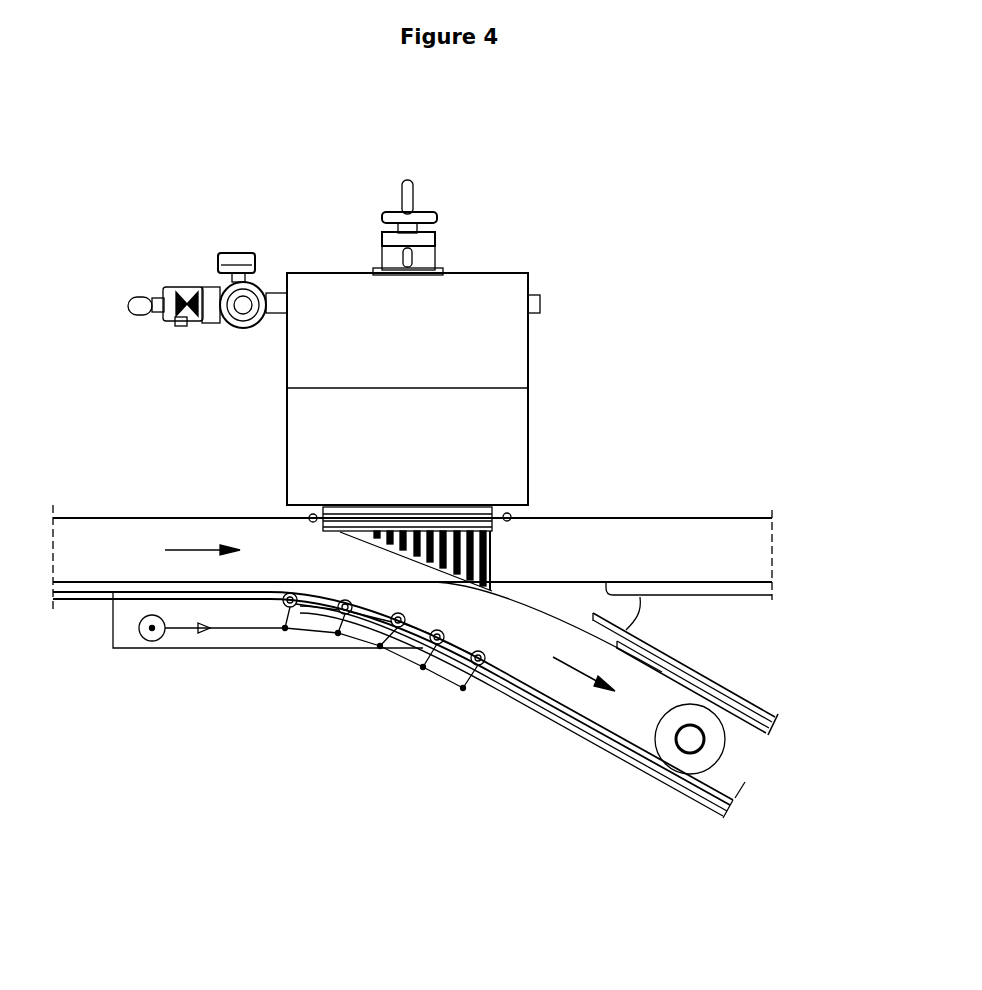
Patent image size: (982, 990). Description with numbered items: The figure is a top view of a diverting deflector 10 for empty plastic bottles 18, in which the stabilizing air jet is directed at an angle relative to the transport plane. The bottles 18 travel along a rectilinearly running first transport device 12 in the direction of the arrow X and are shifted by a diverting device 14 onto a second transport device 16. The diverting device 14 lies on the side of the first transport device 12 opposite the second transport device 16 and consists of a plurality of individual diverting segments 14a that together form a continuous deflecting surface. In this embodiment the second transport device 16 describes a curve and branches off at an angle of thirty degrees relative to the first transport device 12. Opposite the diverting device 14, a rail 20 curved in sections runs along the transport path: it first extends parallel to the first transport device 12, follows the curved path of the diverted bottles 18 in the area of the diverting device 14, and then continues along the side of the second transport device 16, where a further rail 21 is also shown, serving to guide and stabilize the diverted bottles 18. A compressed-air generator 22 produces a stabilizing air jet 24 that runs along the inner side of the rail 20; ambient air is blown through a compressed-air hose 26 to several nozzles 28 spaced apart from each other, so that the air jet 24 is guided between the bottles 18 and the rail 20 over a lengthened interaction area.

The diverting deflector 10 is at (641, 324).
The first transport device 12 is at (694, 532).
The diverting device 14 is at (468, 285).
The diverting segments 14a is at (493, 578).
The second transport device 16 is at (762, 760).
The bottles 18 is at (680, 766).
The rail 20 is at (613, 748).
The rail 21 is at (760, 702).
The compressed-air generator 22 is at (154, 642).
The air jet 24 is at (542, 700).
The compressed-air hose 26 is at (230, 630).
The nozzle 28 is at (303, 633).